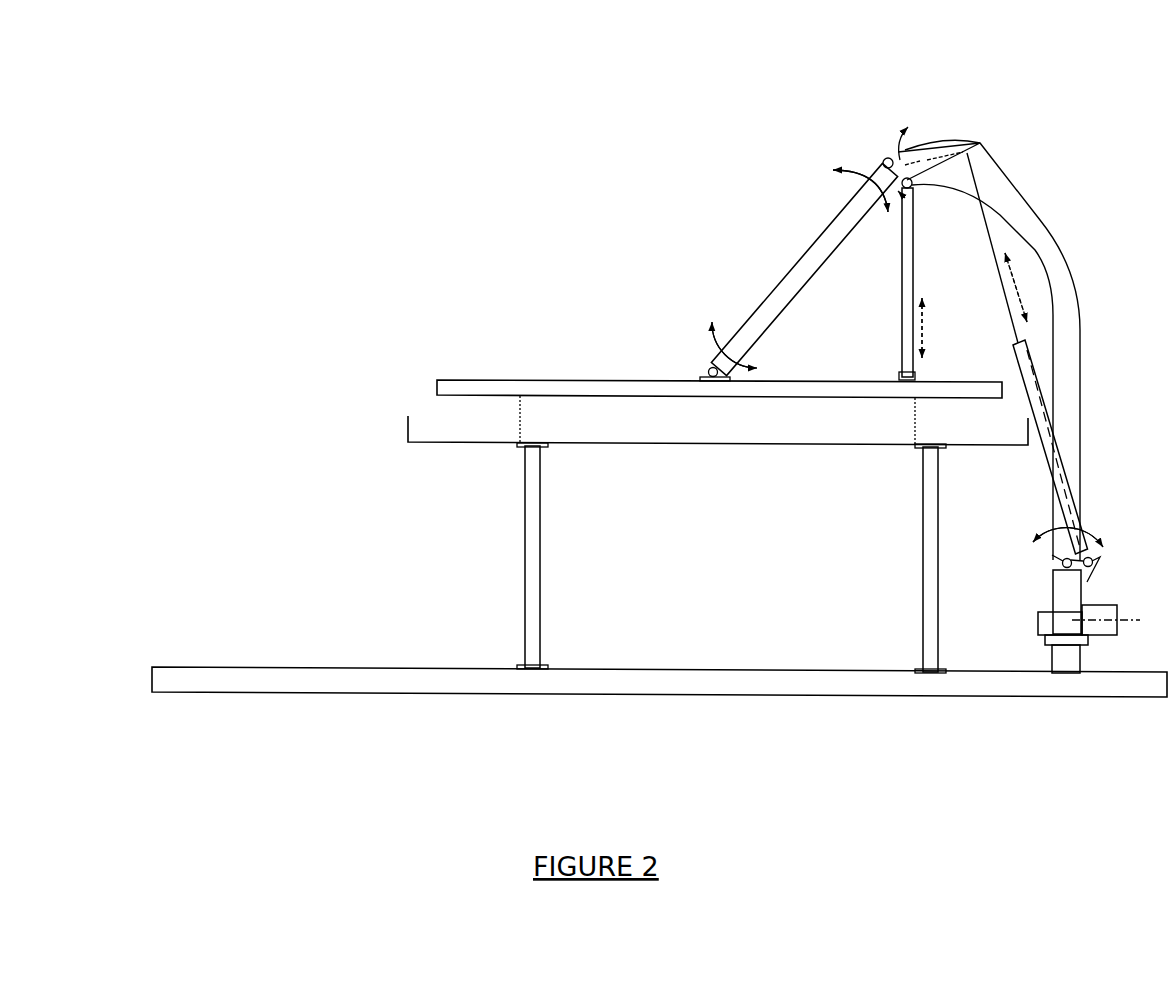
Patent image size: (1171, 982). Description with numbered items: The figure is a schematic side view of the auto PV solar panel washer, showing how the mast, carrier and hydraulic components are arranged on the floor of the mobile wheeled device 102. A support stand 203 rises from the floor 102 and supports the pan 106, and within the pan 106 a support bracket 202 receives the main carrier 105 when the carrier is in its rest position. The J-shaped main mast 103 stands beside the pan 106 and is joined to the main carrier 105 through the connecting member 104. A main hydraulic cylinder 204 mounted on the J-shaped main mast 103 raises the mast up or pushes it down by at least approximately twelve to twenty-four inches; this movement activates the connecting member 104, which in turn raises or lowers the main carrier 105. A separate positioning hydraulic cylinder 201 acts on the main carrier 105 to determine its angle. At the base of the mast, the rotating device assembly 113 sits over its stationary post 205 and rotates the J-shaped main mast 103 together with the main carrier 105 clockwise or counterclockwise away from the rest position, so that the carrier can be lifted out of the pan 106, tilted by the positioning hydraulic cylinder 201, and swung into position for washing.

The floor of the mobile wheeled device 102 is at (659, 740).
The J-shaped main mast 103 is at (956, 309).
The connecting member 104 is at (751, 219).
The main carrier 105 is at (719, 227).
The pan 106 is at (603, 248).
The rotating device assembly 113 is at (992, 695).
The positioning hydraulic cylinder 201 is at (816, 218).
The support bracket 202 is at (597, 248).
The support stand 203 is at (639, 629).
The main hydraulic cylinder 204 is at (892, 536).
The stationary post 205 is at (1011, 727).